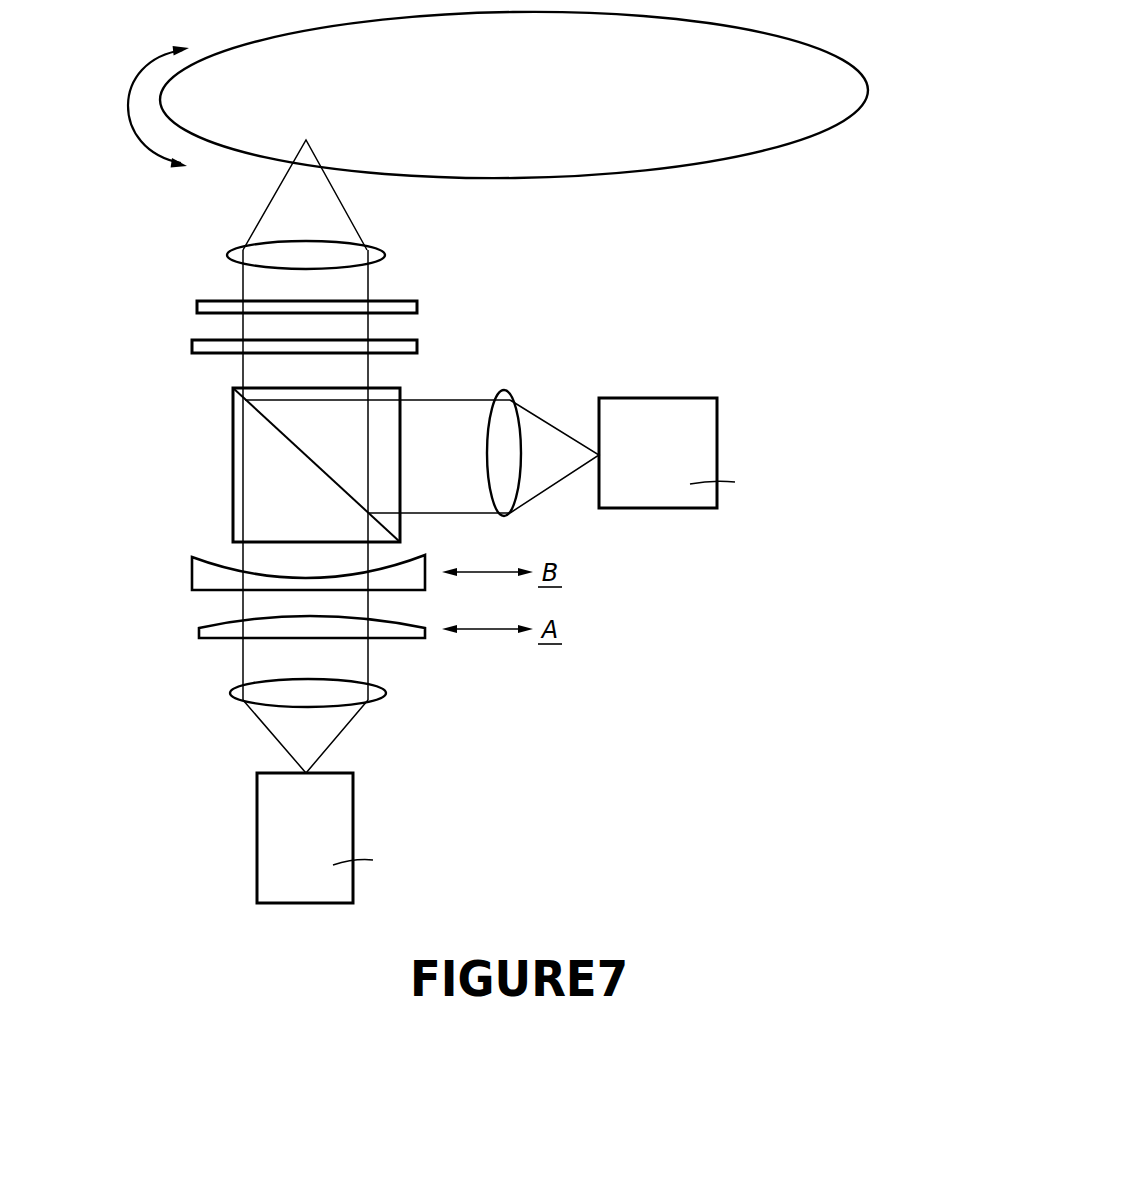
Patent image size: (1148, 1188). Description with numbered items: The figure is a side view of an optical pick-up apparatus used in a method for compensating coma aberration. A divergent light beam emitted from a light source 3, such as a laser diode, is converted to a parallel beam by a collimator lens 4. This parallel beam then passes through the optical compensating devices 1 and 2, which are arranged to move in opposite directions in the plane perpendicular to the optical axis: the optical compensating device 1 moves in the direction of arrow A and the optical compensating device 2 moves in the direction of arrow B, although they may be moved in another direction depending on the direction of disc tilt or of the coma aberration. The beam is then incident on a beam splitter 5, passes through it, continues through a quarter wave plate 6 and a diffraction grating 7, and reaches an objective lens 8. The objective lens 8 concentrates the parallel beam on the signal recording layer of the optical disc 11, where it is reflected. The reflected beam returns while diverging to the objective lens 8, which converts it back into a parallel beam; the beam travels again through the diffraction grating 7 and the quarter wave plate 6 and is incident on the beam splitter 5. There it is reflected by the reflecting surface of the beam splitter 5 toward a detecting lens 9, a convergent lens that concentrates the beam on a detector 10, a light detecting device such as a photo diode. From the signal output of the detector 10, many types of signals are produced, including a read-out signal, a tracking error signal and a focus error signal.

The optical compensating device 1 is at (213, 633).
The optical compensating device 2 is at (200, 558).
The light source 3 is at (263, 860).
The collimator lens 4 is at (240, 700).
The beam splitter 5 is at (237, 443).
The quarter wave plate 6 is at (205, 346).
The diffraction grating 7 is at (205, 300).
The objective lens 8 is at (238, 255).
The detecting lens 9 is at (510, 415).
The detector 10 is at (635, 408).
The optical disc 11 is at (718, 153).